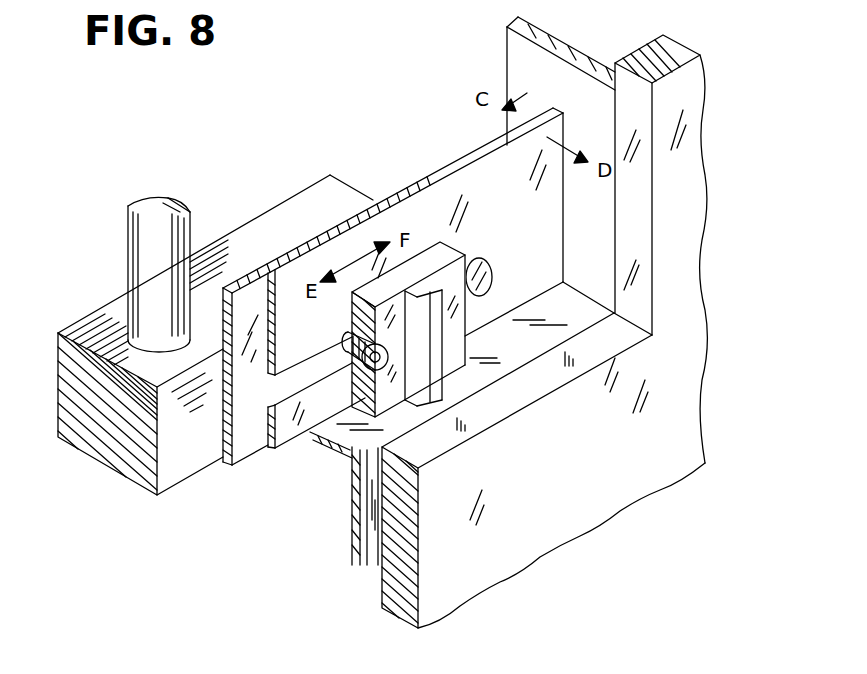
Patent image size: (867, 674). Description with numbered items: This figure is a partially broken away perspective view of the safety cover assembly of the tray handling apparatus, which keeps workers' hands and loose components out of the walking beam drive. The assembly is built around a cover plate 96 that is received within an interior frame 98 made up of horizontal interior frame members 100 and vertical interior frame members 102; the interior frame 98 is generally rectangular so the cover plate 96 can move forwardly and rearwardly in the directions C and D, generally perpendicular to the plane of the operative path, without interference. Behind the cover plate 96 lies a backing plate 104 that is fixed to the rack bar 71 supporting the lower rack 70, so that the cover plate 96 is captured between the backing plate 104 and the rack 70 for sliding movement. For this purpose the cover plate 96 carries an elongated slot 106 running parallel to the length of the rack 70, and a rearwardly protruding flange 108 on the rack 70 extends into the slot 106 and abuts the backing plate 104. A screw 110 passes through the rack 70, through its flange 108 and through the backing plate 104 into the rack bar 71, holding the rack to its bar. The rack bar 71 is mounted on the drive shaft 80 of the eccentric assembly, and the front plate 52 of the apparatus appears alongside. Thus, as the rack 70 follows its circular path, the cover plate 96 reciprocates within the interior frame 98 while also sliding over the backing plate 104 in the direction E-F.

The front plate 52 is at (687, 415).
The lower rack 70 is at (393, 398).
The rack bar 71 is at (173, 478).
The drive shaft 80 is at (148, 250).
The cover plate 96 is at (498, 150).
The interior frame 98 is at (522, 350).
The horizontal interior frame member 100 is at (357, 440).
The vertical interior frame member 102 is at (597, 215).
The backing plate 104 is at (437, 180).
The elongated slot 106 is at (493, 270).
The rearwardly protruding flange 108 is at (340, 337).
The screw 110 is at (350, 368).